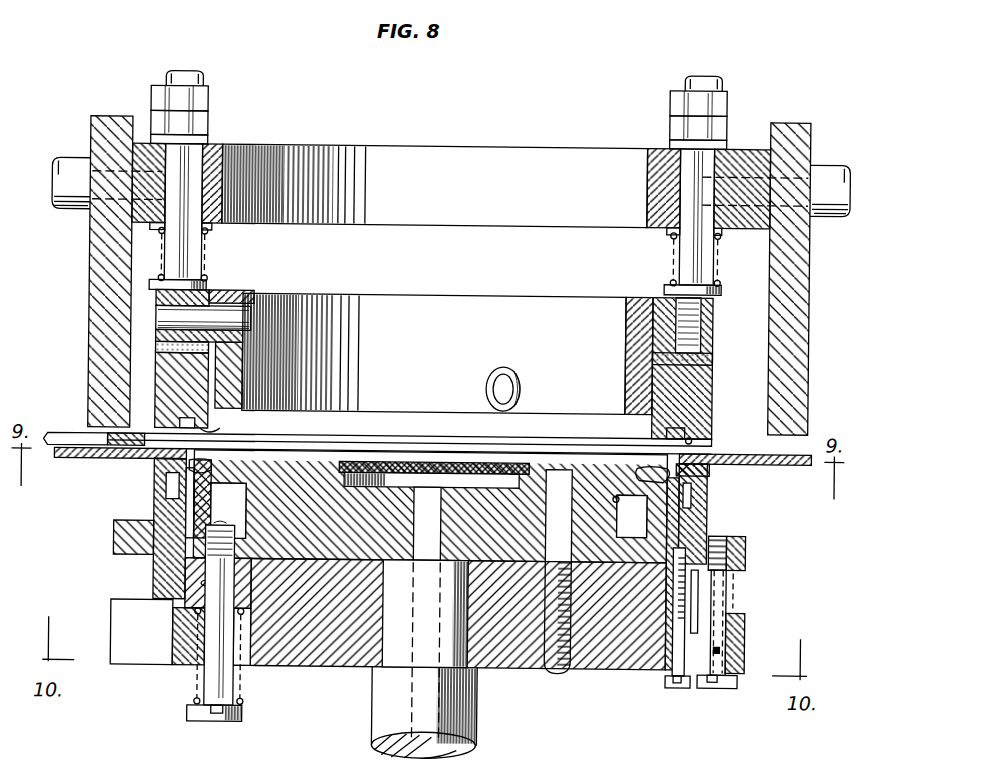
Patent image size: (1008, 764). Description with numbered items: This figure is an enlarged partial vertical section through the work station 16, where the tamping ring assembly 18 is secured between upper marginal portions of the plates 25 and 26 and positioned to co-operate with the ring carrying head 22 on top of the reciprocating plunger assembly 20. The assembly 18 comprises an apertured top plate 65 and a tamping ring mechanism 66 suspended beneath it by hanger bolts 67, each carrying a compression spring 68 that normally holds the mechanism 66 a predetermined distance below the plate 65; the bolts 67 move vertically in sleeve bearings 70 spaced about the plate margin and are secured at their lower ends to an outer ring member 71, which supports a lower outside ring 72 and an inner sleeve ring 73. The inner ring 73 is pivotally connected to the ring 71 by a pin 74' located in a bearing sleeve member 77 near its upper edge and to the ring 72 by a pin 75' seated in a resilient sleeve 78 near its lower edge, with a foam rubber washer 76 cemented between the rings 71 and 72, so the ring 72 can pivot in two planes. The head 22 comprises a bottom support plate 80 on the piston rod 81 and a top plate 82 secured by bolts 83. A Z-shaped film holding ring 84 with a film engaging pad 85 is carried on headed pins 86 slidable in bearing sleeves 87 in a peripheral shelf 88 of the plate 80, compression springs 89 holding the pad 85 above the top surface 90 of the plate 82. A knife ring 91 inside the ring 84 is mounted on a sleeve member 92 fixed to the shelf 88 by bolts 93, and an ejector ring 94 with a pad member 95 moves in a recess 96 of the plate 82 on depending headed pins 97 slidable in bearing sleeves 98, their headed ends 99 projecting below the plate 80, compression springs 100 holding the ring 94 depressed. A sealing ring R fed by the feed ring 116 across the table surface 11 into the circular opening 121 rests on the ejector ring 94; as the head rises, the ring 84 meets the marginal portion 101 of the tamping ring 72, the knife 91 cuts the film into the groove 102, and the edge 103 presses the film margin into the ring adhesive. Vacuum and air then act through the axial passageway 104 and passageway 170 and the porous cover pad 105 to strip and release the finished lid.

The table surface 11 is at (770, 455).
The work station 16 is at (606, 106).
The tamping ring assembly 18 is at (743, 135).
The reciprocating plunger assembly 20 is at (596, 684).
The ring carrying head 22 is at (104, 547).
The plate 25 is at (798, 272).
The plate 26 is at (98, 270).
The apertured top plate 65 is at (528, 162).
The tamping ring mechanism 66 is at (584, 296).
The hanger bolts 67 is at (190, 158).
The compression spring 68 is at (203, 264).
The sleeve bearings 70 is at (208, 195).
The outer ring member 71 is at (660, 300).
The lower outside ring 72 is at (706, 368).
The inner sleeve ring 73 is at (628, 322).
The pin 74' is at (229, 297).
The pin 75' is at (527, 382).
The washer 76 is at (158, 350).
The bearing sleeve members 77 is at (226, 300).
The resilient sleeve 78 is at (503, 366).
The bottom support plate 80 is at (326, 619).
The piston rod 81 is at (470, 716).
The top plate 82 is at (324, 531).
The bolts 83 is at (558, 572).
The film holding ring 84 is at (710, 504).
The film engaging top pad member 85 is at (698, 454).
The headed pins 86 is at (724, 590).
The bearing sleeves 87 is at (722, 650).
The peripheral shelf 88 is at (740, 612).
The compression springs 89 is at (738, 596).
The top surface 90 is at (300, 448).
The knife ring 91 is at (706, 478).
The sleeve member 92 is at (692, 524).
The bolts 93 is at (674, 674).
The ejector ring 94 is at (255, 500).
The pad member 95 is at (640, 472).
The cut away recess 96 is at (616, 496).
The headed pins 97 is at (228, 690).
The bearing sleeves 98 is at (204, 586).
The headed ends 99 is at (244, 714).
The compression springs 100 is at (200, 672).
The marginal portion 101 is at (168, 428).
The groove 102 is at (690, 418).
The downwardly facing edge 103 is at (210, 435).
The axial passageway 104 is at (440, 540).
The porous cover pad 105 is at (402, 462).
The feed ring 116 is at (66, 436).
The circular opening 121 is at (150, 460).
The axial passageway 170 is at (466, 745).
The sealing ring R is at (185, 468).